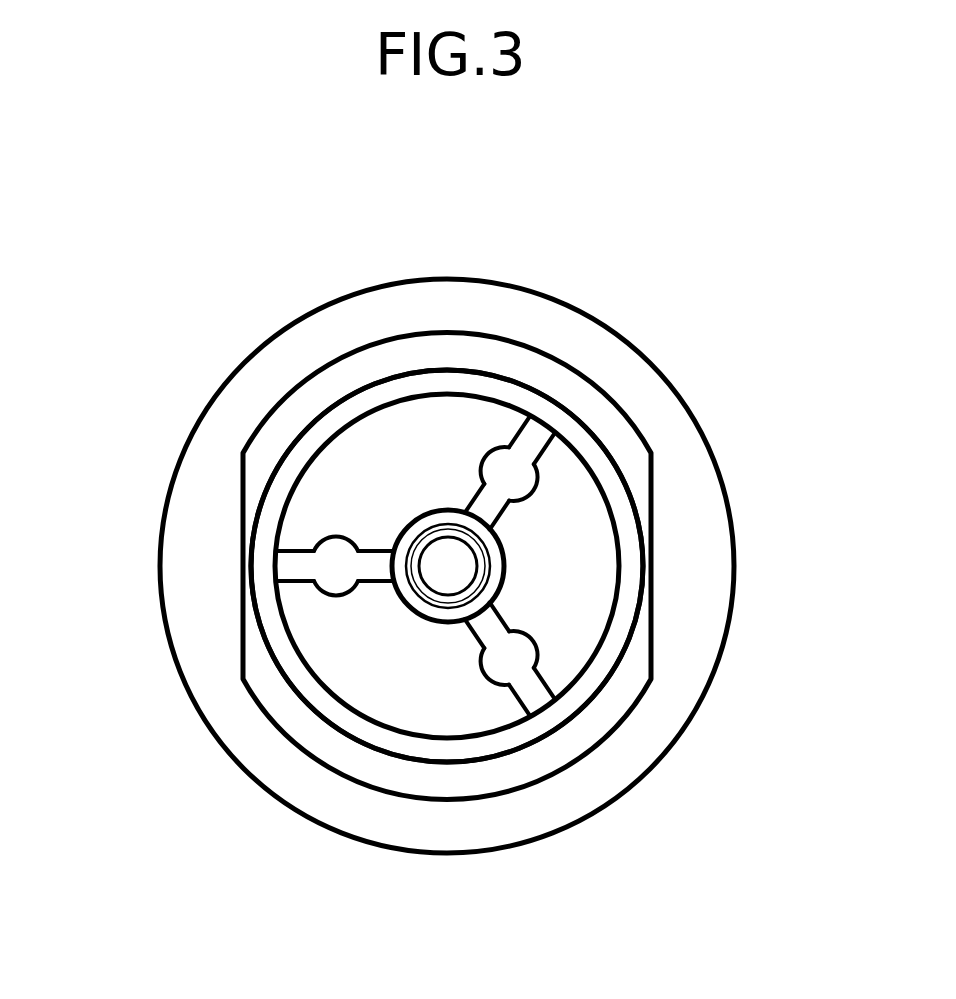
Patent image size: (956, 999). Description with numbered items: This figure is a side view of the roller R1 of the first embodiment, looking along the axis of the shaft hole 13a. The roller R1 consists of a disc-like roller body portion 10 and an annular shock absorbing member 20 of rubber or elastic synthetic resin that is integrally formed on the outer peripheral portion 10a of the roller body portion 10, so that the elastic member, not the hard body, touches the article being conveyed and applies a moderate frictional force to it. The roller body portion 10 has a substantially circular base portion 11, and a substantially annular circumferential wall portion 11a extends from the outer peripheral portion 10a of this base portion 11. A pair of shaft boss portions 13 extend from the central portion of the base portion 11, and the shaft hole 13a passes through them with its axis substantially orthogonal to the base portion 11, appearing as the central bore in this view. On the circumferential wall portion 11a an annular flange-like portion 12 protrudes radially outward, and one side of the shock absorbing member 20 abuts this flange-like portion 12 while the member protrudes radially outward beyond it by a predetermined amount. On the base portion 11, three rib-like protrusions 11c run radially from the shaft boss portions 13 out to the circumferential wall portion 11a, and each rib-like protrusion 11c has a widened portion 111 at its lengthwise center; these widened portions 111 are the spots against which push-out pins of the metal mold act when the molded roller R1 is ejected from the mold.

The roller body portion 10 is at (441, 499).
The outer peripheral portion 10a is at (312, 418).
The base portion 11 is at (426, 564).
The circumferential wall portion 11a is at (503, 742).
The rib-like protrusion 11c is at (527, 438).
The widened portion 111 is at (480, 460).
The flange-like portion 12 is at (447, 782).
The shaft boss portion 13 is at (618, 535).
The shaft hole 13a is at (470, 568).
The shock absorbing member 20 is at (633, 742).
The roller R1 is at (313, 829).